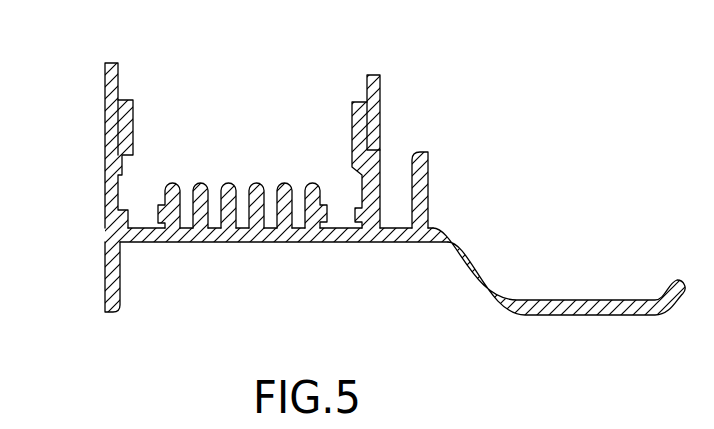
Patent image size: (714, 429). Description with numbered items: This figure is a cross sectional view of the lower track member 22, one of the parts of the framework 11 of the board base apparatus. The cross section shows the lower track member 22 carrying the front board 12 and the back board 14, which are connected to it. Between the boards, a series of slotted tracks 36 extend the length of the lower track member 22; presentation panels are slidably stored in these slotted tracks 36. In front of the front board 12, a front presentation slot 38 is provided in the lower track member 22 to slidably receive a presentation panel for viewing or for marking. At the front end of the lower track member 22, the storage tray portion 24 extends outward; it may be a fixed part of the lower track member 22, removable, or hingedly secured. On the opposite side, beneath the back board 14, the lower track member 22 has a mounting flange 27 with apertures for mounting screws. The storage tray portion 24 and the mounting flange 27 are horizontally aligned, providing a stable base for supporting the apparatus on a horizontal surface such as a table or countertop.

The framework 11 is at (322, 147).
The front board 12 is at (383, 78).
The back board 14 is at (105, 105).
The lower track member 22 is at (288, 243).
The storage tray portion 24 is at (555, 300).
The mounting flange 27 is at (103, 298).
The slotted tracks 36 is at (297, 178).
The front presentation slot 38 is at (392, 180).